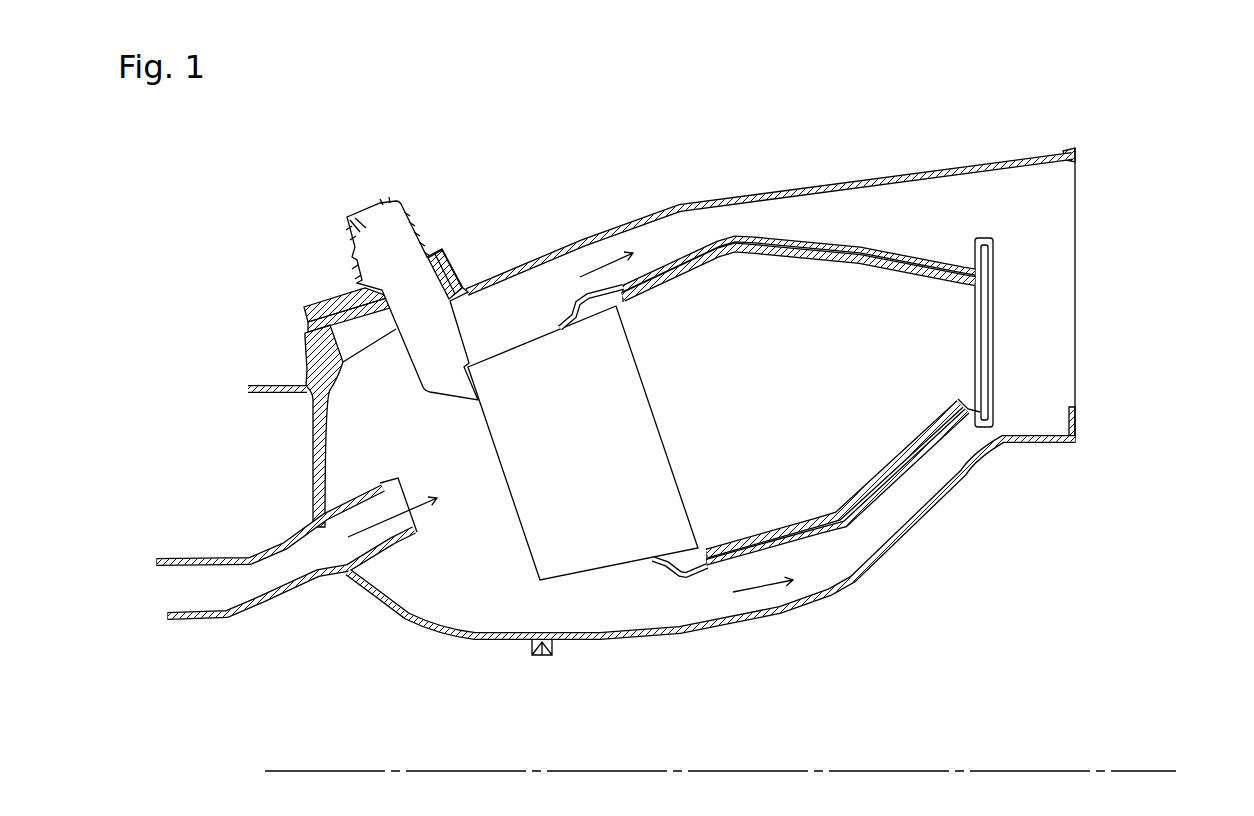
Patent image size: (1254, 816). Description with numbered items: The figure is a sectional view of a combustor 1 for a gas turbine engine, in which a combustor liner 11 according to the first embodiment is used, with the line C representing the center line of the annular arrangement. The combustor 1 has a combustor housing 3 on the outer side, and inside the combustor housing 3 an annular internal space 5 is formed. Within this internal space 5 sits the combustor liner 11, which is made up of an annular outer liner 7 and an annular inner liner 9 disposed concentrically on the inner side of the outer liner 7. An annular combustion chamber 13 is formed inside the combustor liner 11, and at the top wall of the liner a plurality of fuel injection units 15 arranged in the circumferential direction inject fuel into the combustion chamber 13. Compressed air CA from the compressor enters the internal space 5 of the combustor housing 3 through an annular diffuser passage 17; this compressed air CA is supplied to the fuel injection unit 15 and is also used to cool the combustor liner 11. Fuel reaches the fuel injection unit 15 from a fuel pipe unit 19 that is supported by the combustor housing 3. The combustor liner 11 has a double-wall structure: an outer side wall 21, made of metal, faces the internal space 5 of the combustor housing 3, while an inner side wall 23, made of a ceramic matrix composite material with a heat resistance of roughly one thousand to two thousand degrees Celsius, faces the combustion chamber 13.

The combustor 1 is at (462, 147).
The combustor housing 3 is at (753, 182).
The internal space 5 is at (523, 327).
The outer liner 7 is at (920, 257).
The inner liner 9 is at (940, 441).
The combustor liner 11 is at (1173, 247).
The combustion chamber 13 is at (771, 398).
The fuel injection unit 15 is at (587, 573).
The diffuser passage 17 is at (290, 590).
The fuel pipe unit 19 is at (412, 233).
The outer side wall 21 is at (860, 247).
The inner side wall 23 is at (833, 263).
The compressed air CA is at (603, 267).
The center line C is at (1053, 771).